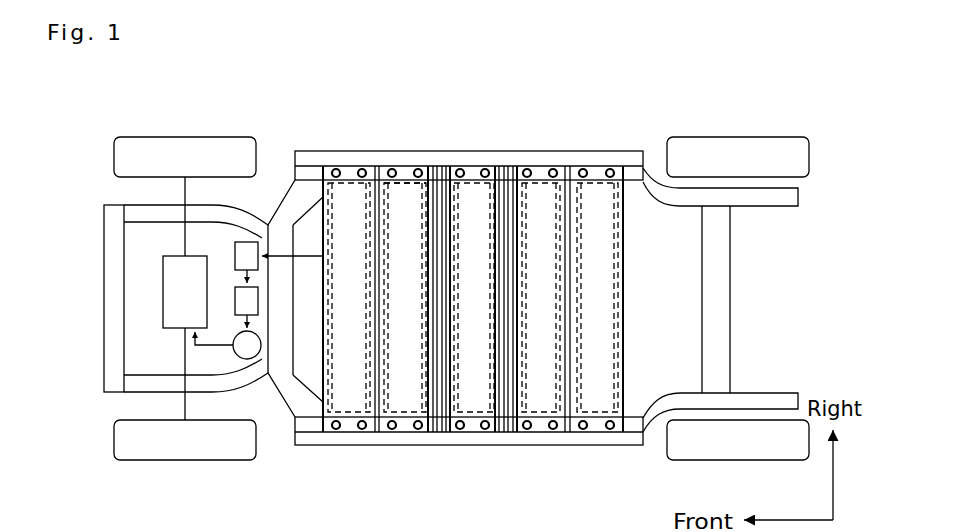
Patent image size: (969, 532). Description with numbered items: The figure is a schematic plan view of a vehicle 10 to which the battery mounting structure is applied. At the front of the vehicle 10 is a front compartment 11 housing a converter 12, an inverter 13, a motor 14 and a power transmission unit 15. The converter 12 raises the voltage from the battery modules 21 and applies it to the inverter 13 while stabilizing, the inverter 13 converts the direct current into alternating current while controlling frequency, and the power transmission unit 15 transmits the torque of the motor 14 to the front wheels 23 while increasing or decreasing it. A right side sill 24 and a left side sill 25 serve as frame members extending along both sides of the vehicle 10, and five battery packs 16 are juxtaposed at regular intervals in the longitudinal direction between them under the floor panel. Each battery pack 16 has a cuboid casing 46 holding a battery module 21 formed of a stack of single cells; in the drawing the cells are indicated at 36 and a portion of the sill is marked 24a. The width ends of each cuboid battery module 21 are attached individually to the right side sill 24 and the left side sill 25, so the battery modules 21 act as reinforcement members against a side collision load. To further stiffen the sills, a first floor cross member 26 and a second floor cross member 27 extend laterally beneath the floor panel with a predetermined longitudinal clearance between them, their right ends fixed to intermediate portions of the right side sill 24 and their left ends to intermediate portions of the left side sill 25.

The vehicle 10 is at (712, 116).
The front compartment 11 is at (150, 340).
The converter 12 is at (250, 240).
The inverter 13 is at (235, 298).
The motor 14 is at (236, 357).
The power transmission unit 15 is at (163, 283).
The battery pack 16 is at (356, 163).
The battery module 21 is at (316, 188).
The front wheels 23 is at (167, 142).
The right side sill 24 is at (635, 152).
The side member inner surface 24a is at (382, 184).
The left side sill 25 is at (617, 442).
The first floor cross member 26 is at (441, 420).
The second floor cross member 27 is at (509, 420).
The battery cell 36 is at (368, 303).
The casing 46 is at (340, 164).